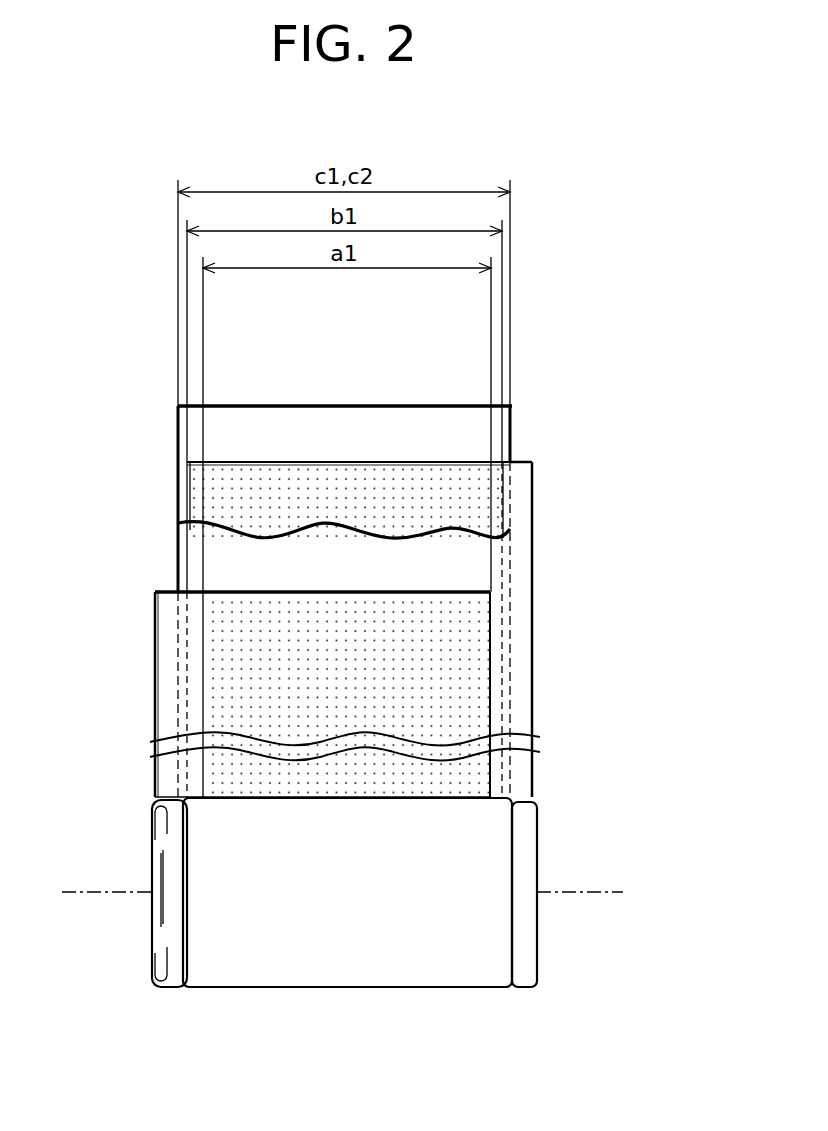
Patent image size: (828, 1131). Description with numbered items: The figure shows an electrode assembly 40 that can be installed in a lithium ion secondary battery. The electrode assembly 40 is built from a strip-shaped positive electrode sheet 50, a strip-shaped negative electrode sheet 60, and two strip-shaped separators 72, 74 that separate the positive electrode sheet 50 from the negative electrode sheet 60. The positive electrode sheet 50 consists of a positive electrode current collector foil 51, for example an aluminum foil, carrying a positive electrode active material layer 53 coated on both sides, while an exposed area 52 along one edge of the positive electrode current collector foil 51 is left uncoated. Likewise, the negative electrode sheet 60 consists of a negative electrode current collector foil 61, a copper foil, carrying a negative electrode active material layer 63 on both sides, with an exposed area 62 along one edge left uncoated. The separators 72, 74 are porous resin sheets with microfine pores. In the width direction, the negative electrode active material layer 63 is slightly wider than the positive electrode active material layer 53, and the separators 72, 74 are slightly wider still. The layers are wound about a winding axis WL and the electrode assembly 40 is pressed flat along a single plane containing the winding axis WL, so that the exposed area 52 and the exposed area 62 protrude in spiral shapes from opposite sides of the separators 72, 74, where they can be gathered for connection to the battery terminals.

The electrode assembly 40 is at (380, 960).
The positive electrode sheet 50 is at (153, 643).
The positive electrode current collector foil 51 is at (331, 592).
The exposed area 52 is at (170, 702).
The positive electrode active material layer 53 is at (235, 688).
The negative electrode sheet 60 is at (538, 472).
The negative electrode current collector foil 61 is at (331, 462).
The exposed area 62 is at (518, 513).
The negative electrode active material layer 63 is at (437, 477).
The separator 72 is at (197, 432).
The separator 74 is at (193, 565).
The winding axis WL is at (615, 890).